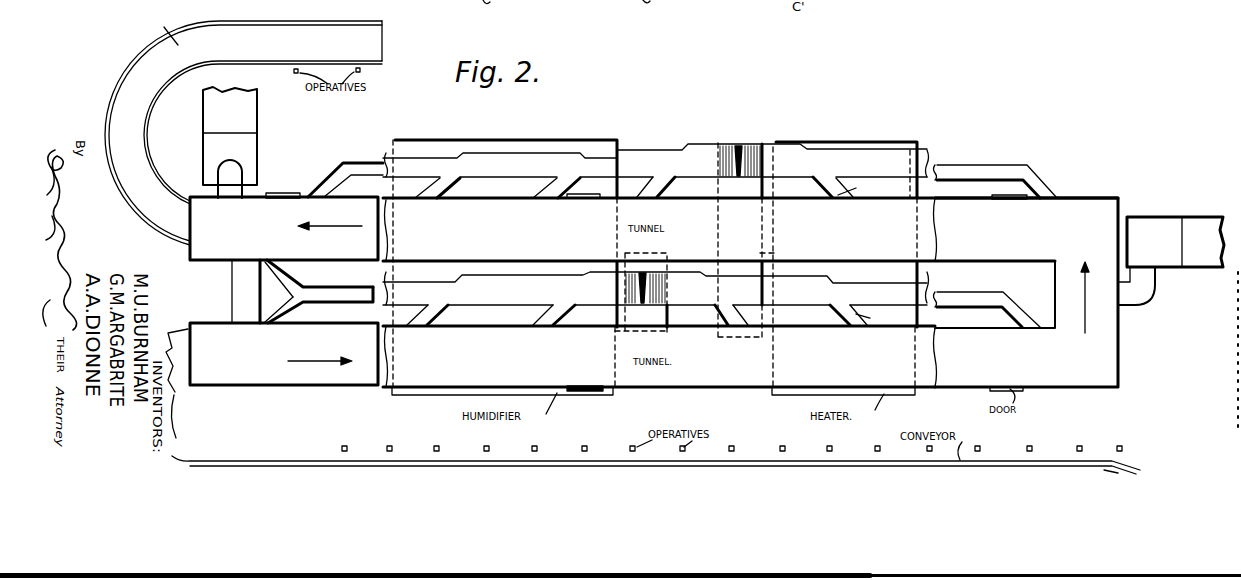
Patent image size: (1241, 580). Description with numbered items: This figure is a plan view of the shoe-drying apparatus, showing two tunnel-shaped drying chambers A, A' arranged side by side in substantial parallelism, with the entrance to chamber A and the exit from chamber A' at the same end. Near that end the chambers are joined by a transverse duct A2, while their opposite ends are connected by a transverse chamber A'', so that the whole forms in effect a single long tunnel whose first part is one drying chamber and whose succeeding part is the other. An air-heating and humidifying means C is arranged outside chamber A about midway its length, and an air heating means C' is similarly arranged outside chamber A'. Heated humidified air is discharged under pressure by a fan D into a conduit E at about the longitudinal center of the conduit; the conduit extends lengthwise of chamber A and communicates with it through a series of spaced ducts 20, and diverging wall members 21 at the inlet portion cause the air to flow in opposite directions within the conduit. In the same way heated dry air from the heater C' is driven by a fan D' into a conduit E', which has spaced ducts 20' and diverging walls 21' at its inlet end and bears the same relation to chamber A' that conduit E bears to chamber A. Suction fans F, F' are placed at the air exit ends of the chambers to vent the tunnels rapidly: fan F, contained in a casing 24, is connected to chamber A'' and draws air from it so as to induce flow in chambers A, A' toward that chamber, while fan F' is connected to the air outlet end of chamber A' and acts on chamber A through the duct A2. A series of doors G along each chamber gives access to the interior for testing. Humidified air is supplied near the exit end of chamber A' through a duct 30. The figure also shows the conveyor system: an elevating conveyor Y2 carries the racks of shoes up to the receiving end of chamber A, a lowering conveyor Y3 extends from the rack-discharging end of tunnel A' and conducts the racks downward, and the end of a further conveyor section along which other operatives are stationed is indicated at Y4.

The drying chamber A is at (284, 378).
The drying chamber A' is at (280, 242).
The transverse duct A2 is at (240, 300).
The transverse chamber A'' is at (1045, 279).
The air-heating and humidifying means C is at (500, 249).
The air heating means C' is at (846, 250).
The fan D is at (655, 304).
The fan D' is at (771, 253).
The conduit E is at (655, 280).
The conduit E' is at (772, 249).
The suction fan F is at (1175, 232).
The suction fan F' is at (245, 142).
The door G is at (290, 195).
The duct 20 is at (652, 320).
The duct 20' is at (733, 155).
The diverging wall member 21 is at (667, 267).
The diverging wall 21' is at (743, 145).
The casing 24 is at (1157, 272).
The duct 30 is at (287, 275).
The elevating conveyor Y2 is at (202, 337).
The lowering conveyor Y3 is at (159, 189).
The conveyor section end Y4 is at (223, 65).